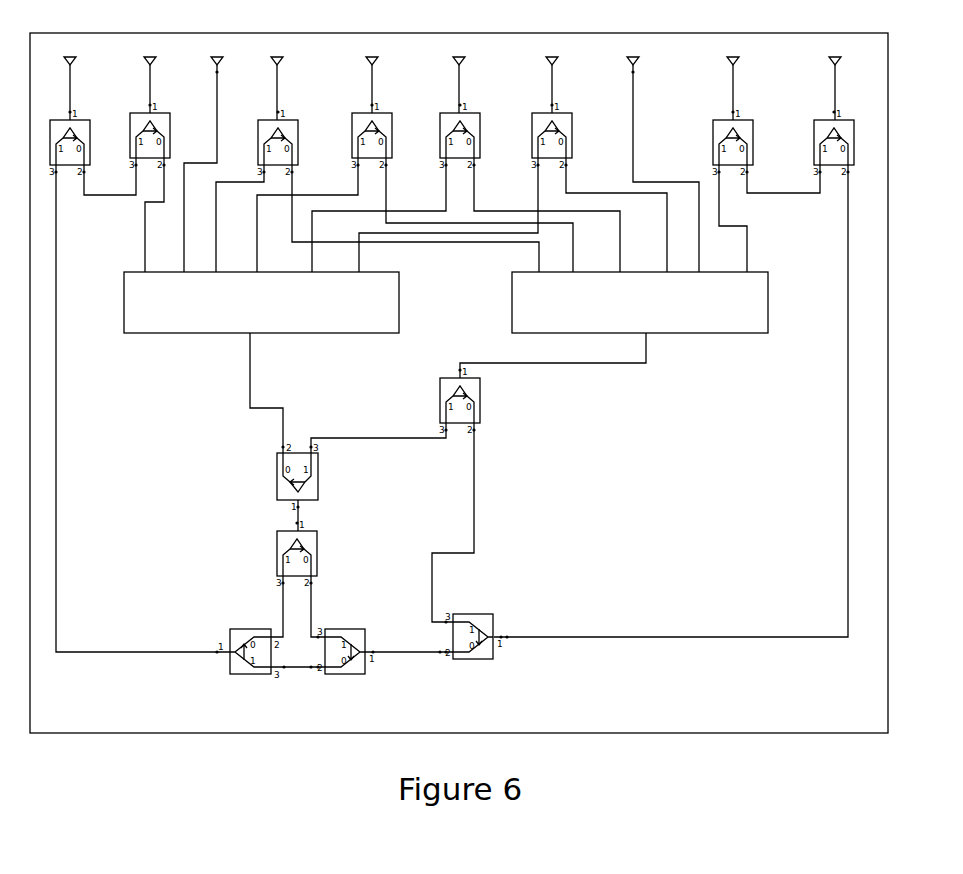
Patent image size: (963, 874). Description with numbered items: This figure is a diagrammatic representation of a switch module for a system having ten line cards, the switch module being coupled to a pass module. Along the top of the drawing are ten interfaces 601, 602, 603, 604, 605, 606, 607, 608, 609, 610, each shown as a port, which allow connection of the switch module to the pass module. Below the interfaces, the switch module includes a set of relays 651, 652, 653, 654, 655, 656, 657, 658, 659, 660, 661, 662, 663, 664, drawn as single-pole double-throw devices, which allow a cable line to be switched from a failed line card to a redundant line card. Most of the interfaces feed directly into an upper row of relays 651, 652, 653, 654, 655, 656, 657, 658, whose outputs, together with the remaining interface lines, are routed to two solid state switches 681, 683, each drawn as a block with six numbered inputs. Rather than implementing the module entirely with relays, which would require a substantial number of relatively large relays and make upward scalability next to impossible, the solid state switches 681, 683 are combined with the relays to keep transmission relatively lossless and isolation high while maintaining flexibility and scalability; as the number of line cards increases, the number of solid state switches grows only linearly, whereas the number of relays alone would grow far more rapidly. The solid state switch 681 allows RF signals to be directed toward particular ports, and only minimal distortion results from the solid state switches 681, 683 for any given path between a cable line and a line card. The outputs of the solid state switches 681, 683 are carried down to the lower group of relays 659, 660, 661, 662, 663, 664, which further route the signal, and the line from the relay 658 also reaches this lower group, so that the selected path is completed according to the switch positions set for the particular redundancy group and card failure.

The interface 601 is at (857, 66).
The interface 602 is at (769, 66).
The interface 603 is at (667, 142).
The interface 604 is at (590, 62).
The interface 605 is at (496, 62).
The interface 606 is at (406, 62).
The interface 607 is at (314, 66).
The interface 608 is at (211, 142).
The interface 609 is at (174, 62).
The interface 610 is at (92, 66).
The relay 651 is at (131, 373).
The relay 652 is at (171, 181).
The relay 653 is at (377, 173).
The relay 654 is at (415, 187).
The relay 655 is at (466, 180).
The relay 656 is at (513, 180).
The relay 657 is at (748, 184).
The relay 658 is at (694, 368).
The relay 659 is at (430, 494).
The relay 660 is at (293, 487).
The relay 661 is at (311, 578).
The relay 662 is at (267, 642).
The relay 663 is at (384, 667).
The relay 664 is at (477, 653).
The solid state switch 681 is at (261, 351).
The solid state switch 683 is at (614, 314).